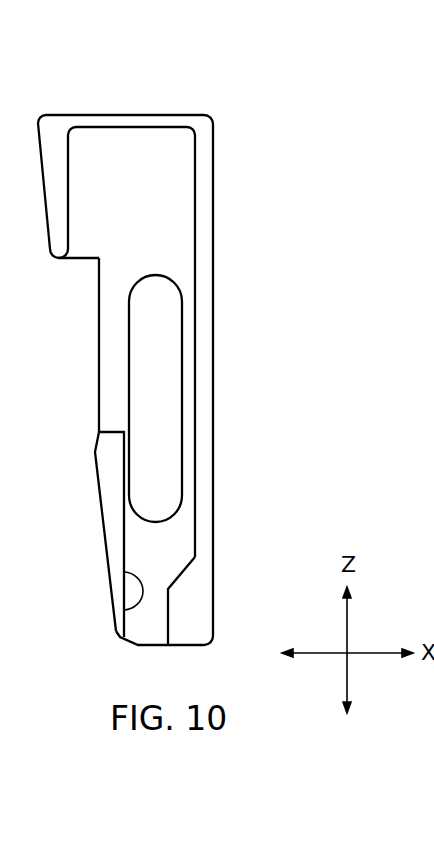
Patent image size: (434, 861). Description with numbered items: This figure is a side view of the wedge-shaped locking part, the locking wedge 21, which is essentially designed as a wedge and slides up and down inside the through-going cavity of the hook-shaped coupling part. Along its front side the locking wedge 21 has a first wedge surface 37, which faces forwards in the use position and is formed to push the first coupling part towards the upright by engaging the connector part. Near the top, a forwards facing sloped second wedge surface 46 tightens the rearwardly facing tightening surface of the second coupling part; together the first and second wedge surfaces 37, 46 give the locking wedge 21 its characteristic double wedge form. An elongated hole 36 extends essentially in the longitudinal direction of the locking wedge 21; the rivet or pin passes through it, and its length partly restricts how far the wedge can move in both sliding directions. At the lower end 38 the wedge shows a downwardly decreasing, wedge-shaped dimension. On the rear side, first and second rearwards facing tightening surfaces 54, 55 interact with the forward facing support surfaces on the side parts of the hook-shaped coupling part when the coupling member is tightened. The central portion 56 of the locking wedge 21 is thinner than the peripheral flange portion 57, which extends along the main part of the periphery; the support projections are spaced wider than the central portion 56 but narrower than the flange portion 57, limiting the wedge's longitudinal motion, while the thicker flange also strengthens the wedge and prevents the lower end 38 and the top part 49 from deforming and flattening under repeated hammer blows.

The locking wedge 21 is at (293, 254).
The elongated hole 36 is at (163, 415).
The first wedge surface 37 is at (103, 531).
The lower end 38 is at (137, 645).
The second wedge surface 46 is at (40, 172).
The top part 49 is at (143, 113).
The first rearwards facing tightening surface 54 is at (68, 188).
The second rearwards facing tightening surface 55 is at (141, 594).
The central portion 56 is at (163, 198).
The peripheral flange portion 57 is at (115, 497).